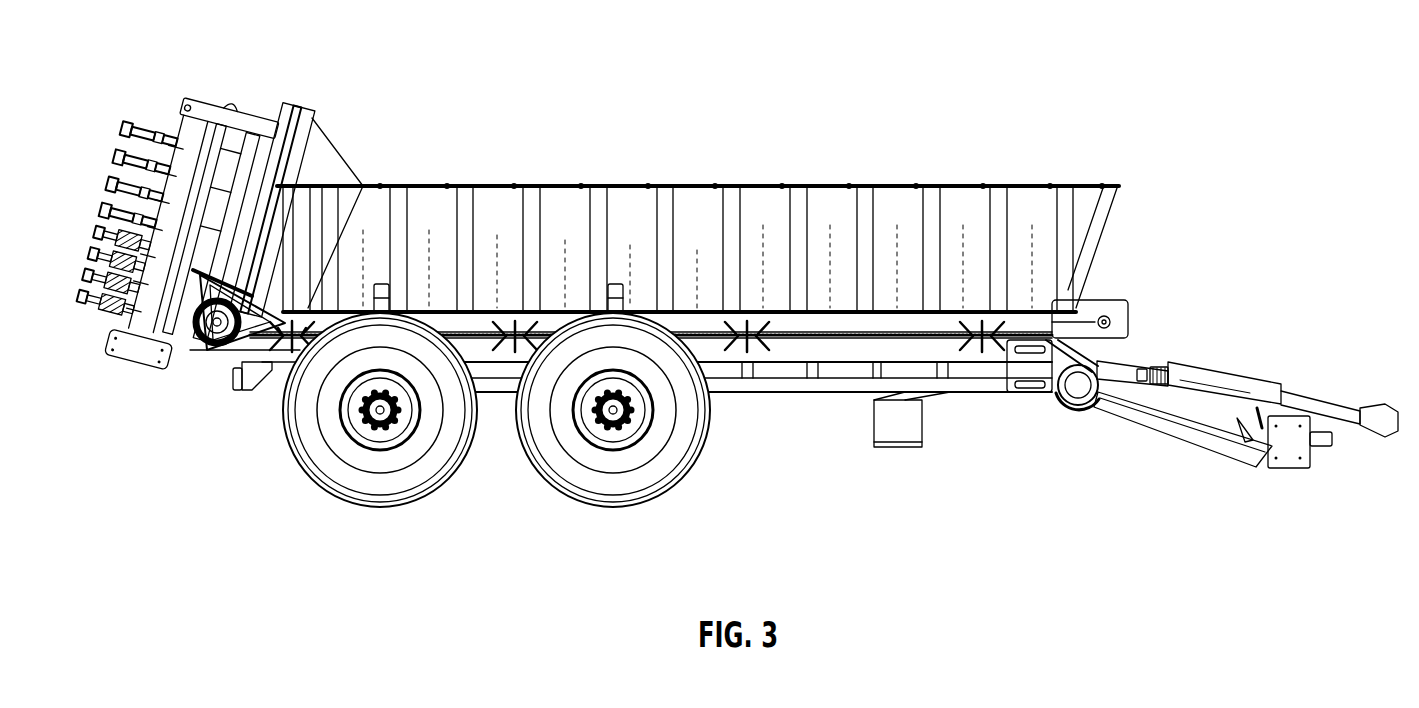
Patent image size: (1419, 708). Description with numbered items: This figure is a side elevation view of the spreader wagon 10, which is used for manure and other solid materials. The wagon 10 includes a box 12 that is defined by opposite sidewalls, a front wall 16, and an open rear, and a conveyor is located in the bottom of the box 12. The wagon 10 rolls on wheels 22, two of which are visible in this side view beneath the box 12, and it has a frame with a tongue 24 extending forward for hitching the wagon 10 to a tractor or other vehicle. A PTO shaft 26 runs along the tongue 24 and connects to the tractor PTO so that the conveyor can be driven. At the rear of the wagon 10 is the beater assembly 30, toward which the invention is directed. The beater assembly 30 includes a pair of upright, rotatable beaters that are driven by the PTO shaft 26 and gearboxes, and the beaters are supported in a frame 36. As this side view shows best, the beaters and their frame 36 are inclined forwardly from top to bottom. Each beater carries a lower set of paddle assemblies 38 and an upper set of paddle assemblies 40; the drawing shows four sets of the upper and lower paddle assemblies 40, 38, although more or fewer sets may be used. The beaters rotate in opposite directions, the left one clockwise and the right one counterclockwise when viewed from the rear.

The spreader wagon 10 is at (709, 117).
The box 12 is at (898, 184).
The front wall 16 is at (1107, 213).
The wheels 22 is at (386, 508).
The tongue 24 is at (1333, 438).
The PTO shaft 26 is at (1381, 406).
The beater assembly 30 is at (153, 75).
The frame 36 is at (213, 99).
The lower set of paddle assemblies 38 is at (93, 223).
The upper set of paddle assemblies 40 is at (113, 117).